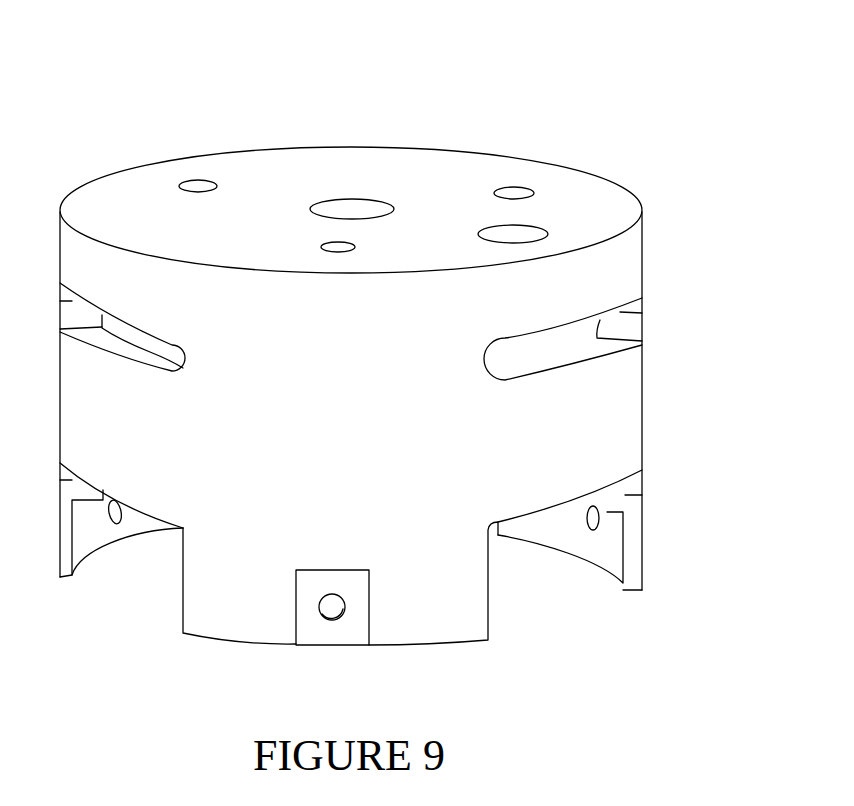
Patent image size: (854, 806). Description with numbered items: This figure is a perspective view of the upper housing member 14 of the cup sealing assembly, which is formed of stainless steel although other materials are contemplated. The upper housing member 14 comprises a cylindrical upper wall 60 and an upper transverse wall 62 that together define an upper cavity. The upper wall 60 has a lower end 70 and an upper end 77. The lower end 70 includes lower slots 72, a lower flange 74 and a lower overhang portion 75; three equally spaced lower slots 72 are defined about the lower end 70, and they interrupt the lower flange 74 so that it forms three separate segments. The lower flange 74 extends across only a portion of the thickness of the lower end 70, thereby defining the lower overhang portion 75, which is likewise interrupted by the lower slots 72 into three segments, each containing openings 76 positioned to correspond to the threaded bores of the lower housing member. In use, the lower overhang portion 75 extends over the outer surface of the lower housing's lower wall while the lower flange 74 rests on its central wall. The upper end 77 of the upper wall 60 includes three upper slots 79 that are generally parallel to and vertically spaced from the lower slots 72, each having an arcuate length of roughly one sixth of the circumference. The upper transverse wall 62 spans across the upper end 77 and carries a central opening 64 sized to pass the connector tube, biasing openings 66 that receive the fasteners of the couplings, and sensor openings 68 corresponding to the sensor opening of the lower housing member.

The upper housing member 14 is at (638, 44).
The upper wall 60 is at (655, 375).
The upper transverse wall 62 is at (162, 180).
The central opening 64 is at (346, 188).
The biasing openings 66 is at (518, 178).
The sensor openings 68 is at (557, 224).
The lower end 70 is at (667, 500).
The lower slots 72 is at (120, 612).
The lower flange 74 is at (603, 526).
The lower overhang portion 75 is at (640, 572).
The openings 76 is at (597, 508).
The upper end 77 is at (668, 230).
The upper slots 79 is at (622, 328).